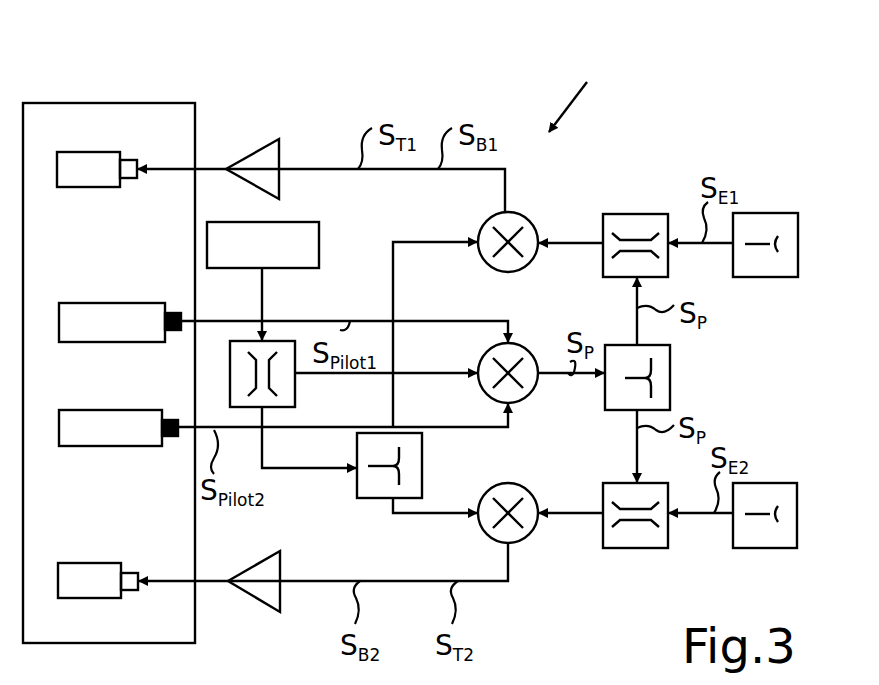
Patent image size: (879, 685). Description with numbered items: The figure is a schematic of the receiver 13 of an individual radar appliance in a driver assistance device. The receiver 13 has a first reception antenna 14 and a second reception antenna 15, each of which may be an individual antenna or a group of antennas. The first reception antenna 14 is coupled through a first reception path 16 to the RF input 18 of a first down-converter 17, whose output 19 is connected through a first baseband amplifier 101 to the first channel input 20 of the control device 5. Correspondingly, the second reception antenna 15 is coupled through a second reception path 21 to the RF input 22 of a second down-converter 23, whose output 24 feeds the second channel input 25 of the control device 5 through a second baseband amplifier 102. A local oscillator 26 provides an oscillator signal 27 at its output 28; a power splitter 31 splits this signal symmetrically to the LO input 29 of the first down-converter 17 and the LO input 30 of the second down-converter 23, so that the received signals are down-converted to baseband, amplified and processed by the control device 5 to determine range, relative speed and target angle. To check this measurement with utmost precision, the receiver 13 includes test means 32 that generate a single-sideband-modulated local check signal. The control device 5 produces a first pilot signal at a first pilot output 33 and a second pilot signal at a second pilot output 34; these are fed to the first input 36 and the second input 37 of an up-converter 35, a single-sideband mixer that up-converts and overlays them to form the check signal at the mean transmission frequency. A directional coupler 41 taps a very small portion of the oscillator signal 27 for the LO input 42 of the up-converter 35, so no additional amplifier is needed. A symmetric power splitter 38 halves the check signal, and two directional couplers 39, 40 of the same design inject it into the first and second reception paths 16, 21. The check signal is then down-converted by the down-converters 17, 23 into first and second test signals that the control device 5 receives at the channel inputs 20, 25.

The control device 5 is at (176, 115).
The receiver 13 is at (580, 91).
The first reception antenna 14 is at (759, 212).
The second reception antenna 15 is at (757, 483).
The first reception path 16 is at (581, 236).
The first down-converter 17 is at (528, 221).
The RF input 18 is at (535, 258).
The output 19 is at (503, 214).
The first channel input 20 is at (75, 152).
The second reception path 21 is at (586, 523).
The RF input 22 is at (540, 506).
The second down-converter 23 is at (484, 530).
The output 24 is at (515, 543).
The second channel input 25 is at (94, 563).
The local oscillator 26 is at (296, 222).
The oscillator signal 27 is at (265, 298).
The output 28 is at (260, 270).
The LO input 29 is at (483, 250).
The LO input 30 is at (482, 503).
The power splitter 31 is at (360, 470).
The test means 32 is at (688, 333).
The first pilot output 33 is at (90, 303).
The second pilot output 34 is at (80, 446).
The up-converter 35 is at (490, 352).
The first input 36 is at (514, 346).
The second input 37 is at (514, 402).
The symmetric power splitter 38 is at (670, 372).
The directional coupler 39 is at (631, 214).
The directional coupler 40 is at (640, 548).
The directional coupler 41 is at (285, 398).
The LO input 42 is at (484, 382).
The first baseband amplifier 101 is at (247, 158).
The second baseband amplifier 102 is at (255, 590).